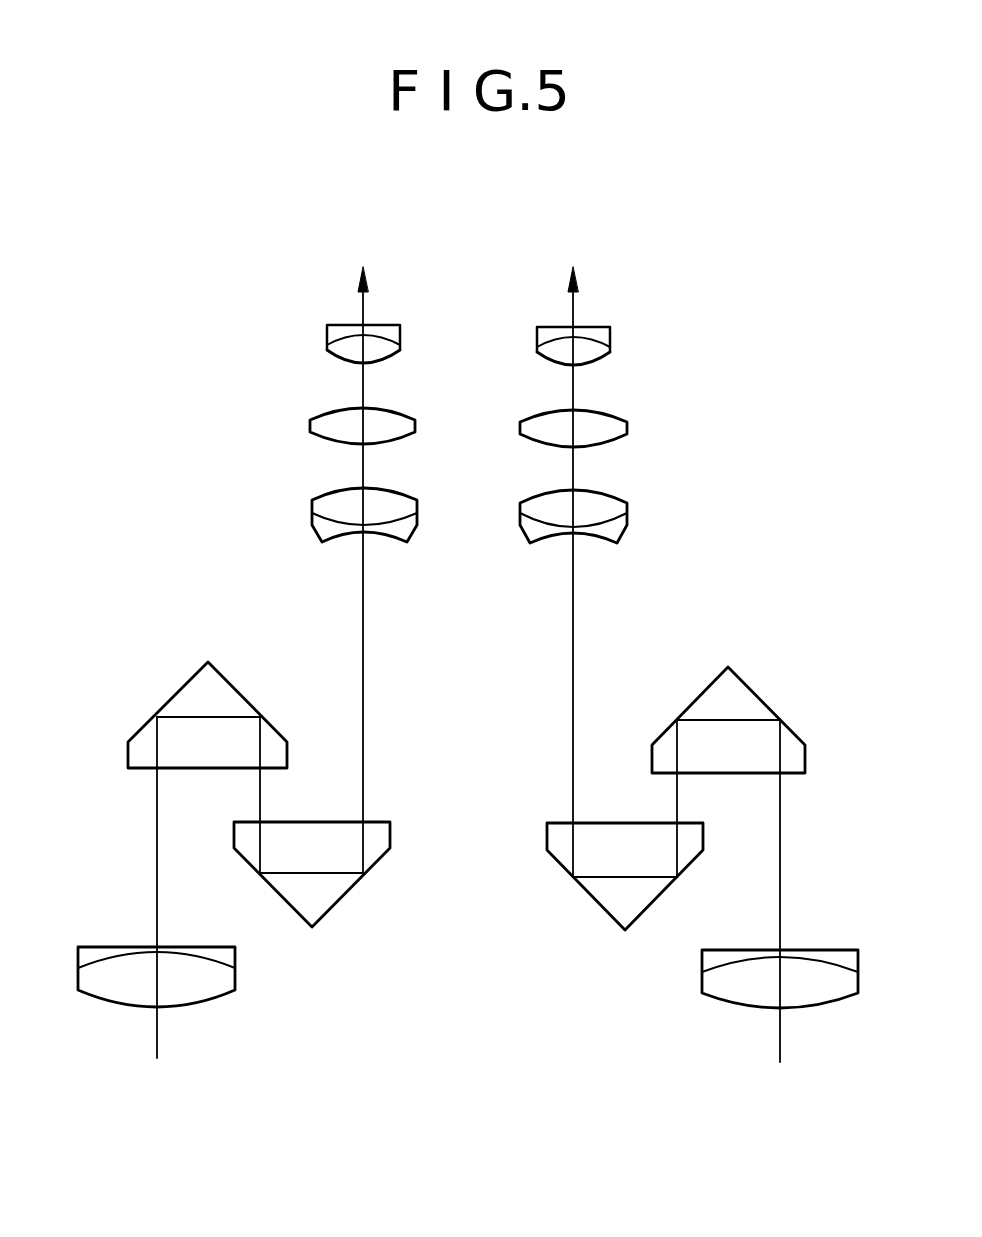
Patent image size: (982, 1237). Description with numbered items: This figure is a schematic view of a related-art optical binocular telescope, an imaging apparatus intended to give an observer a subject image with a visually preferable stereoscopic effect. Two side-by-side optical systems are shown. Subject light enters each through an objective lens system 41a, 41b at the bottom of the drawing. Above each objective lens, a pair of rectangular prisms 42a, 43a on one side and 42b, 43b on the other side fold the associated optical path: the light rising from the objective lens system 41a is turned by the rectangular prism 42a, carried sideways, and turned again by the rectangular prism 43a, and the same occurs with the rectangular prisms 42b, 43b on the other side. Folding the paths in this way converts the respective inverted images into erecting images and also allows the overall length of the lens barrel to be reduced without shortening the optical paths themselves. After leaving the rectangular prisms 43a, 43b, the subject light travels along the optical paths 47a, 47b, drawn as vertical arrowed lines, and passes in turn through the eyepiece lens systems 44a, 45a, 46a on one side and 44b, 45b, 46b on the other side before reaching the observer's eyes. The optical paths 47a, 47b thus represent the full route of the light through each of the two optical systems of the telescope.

The objective lens system 41a is at (212, 1000).
The objective lens system 41b is at (737, 1007).
The rectangular prism 42a is at (177, 690).
The rectangular prism 42b is at (757, 688).
The rectangular prism 43a is at (342, 900).
The rectangular prism 43b is at (600, 907).
The eyepiece lens system 44a is at (315, 500).
The eyepiece lens system 44b is at (610, 497).
The eyepiece lens system 45a is at (322, 417).
The eyepiece lens system 45b is at (627, 420).
The eyepiece lens system 46a is at (327, 340).
The eyepiece lens system 46b is at (610, 335).
The optical path 47a is at (363, 632).
The optical path 47b is at (573, 707).